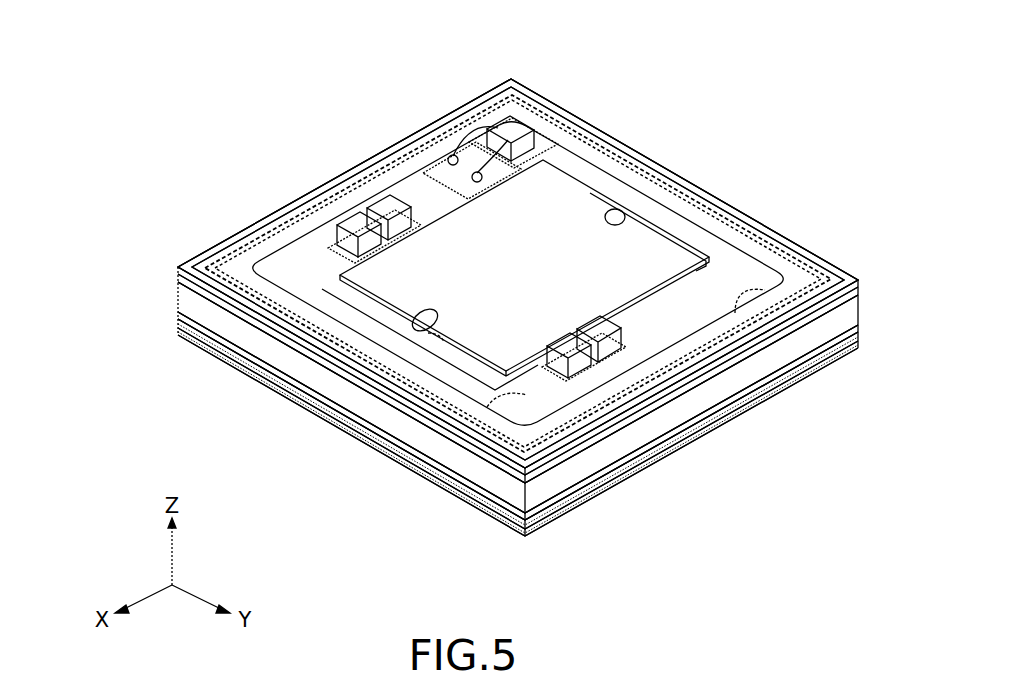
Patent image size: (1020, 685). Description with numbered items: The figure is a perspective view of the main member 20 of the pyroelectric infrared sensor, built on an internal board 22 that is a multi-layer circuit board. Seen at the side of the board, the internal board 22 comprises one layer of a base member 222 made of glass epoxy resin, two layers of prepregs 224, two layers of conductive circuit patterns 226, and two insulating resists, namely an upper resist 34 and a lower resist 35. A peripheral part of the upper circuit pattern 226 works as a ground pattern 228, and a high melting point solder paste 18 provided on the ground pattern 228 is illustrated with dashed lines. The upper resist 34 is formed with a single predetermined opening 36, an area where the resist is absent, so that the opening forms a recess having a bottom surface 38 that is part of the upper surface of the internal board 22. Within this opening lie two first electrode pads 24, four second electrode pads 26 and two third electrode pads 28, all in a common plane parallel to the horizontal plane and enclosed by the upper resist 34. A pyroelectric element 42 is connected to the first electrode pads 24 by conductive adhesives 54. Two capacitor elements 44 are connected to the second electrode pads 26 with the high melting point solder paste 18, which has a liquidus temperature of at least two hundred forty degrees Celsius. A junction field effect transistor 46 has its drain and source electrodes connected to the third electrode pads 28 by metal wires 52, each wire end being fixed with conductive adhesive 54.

The main member 20 is at (205, 79).
The internal board 22 is at (112, 443).
The high melting point solder paste 18 is at (336, 236).
The first electrode pads 24 is at (653, 257).
The second electrode pads 26 is at (346, 243).
The third electrode pads 28 is at (476, 173).
The upper resist 34 is at (178, 268).
The lower resist 35 is at (199, 352).
The predetermined opening 36 is at (368, 300).
The bottom surface 38 is at (750, 256).
The pyroelectric element 42 is at (715, 238).
The capacitor elements 44 is at (368, 210).
The junction field effect transistor 46 is at (524, 140).
The wire 52 is at (501, 118).
The conductive adhesive 54 is at (620, 212).
The base member 222 is at (178, 302).
The prepregs 224 is at (178, 279).
The circuit patterns 226 is at (196, 343).
The ground pattern 228 is at (230, 265).